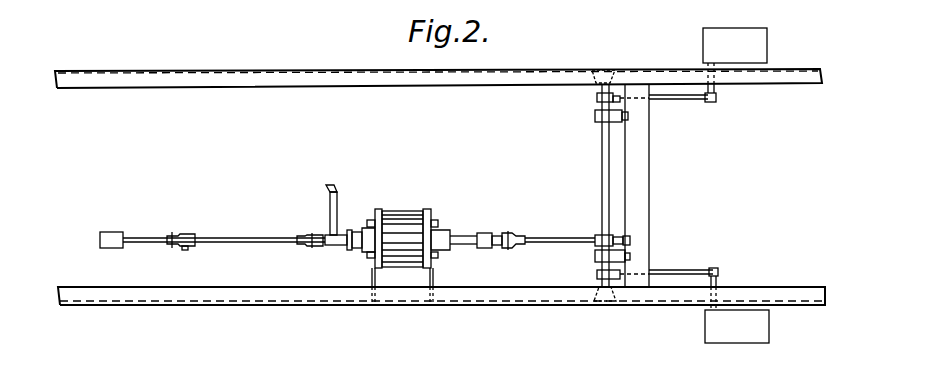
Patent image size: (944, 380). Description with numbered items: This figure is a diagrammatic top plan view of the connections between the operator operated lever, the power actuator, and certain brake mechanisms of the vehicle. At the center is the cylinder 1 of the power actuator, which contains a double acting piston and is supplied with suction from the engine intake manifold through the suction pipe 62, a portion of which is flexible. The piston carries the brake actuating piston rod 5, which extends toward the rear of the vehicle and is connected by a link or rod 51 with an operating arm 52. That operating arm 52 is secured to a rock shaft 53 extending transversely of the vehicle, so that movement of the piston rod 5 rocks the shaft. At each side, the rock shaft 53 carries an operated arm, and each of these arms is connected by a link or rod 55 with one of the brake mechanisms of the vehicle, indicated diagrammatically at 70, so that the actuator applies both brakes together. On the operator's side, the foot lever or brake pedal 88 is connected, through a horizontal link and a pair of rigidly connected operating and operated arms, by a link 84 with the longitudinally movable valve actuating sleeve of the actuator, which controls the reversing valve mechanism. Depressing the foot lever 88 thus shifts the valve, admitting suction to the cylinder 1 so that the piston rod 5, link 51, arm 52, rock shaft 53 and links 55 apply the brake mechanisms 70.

The cylinder 1 is at (398, 211).
The brake actuating piston rod 5 is at (471, 241).
The link or rod 51 is at (560, 233).
The operating arm 52 is at (617, 236).
The rock shaft 53 is at (602, 167).
The link or rod 55 is at (692, 98).
The brake mechanism 70 is at (767, 50).
The suction pipe 62 is at (337, 191).
The link 84 is at (224, 233).
The foot lever 88 is at (130, 246).